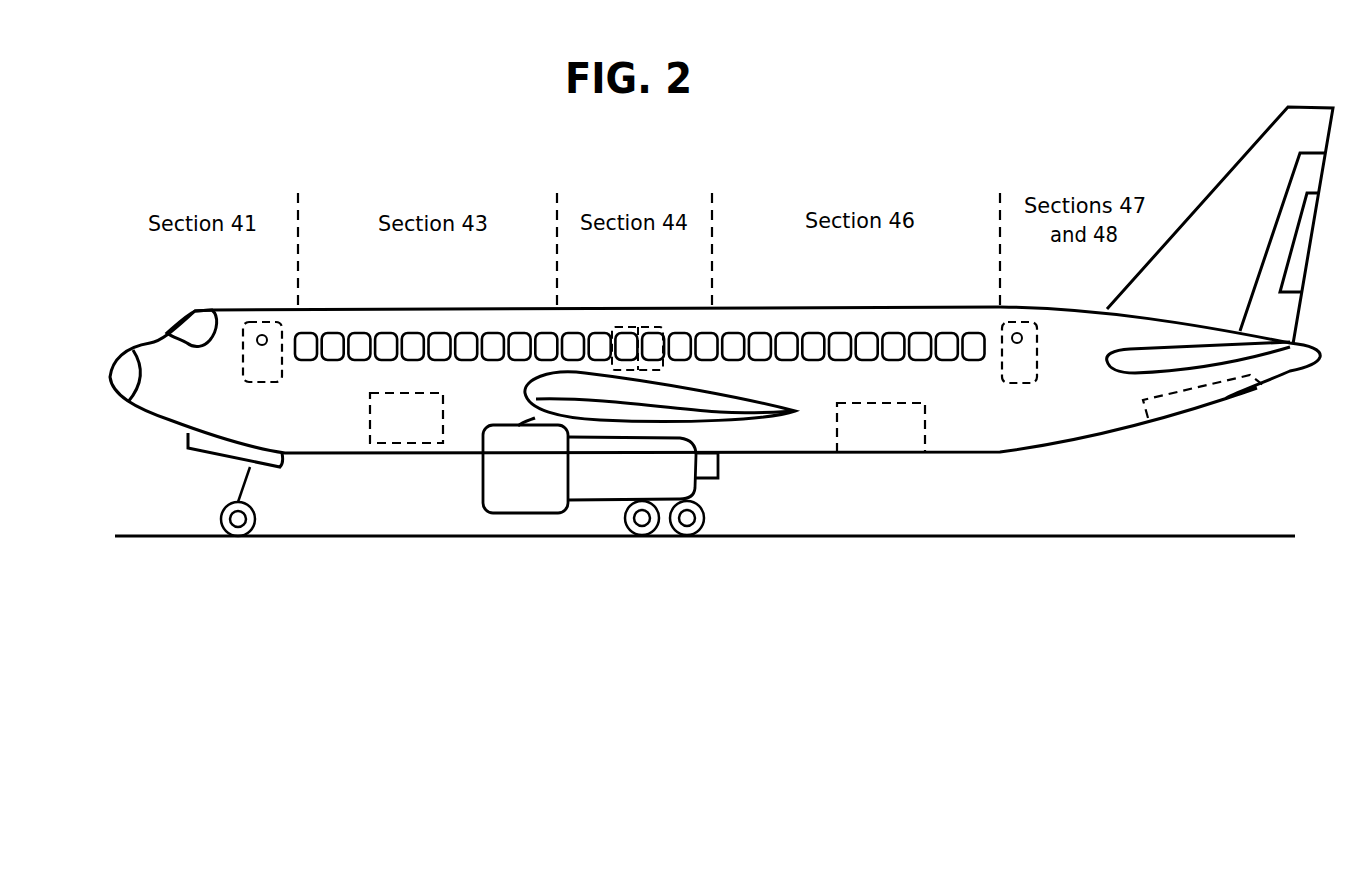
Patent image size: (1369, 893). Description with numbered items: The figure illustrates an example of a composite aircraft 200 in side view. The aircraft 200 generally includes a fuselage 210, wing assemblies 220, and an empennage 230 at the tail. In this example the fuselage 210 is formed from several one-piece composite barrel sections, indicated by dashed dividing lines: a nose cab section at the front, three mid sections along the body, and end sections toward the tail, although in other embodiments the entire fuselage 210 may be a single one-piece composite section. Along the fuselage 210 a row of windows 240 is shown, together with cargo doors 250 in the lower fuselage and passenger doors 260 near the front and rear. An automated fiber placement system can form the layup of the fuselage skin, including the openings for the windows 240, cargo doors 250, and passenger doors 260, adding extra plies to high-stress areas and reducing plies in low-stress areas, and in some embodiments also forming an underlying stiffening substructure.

The composite aircraft 200 is at (136, 299).
The fuselage 210 is at (1062, 447).
The wing assemblies 220 is at (755, 427).
The empennage 230 is at (1223, 177).
The windows 240 is at (860, 333).
The cargo doors 250 is at (910, 432).
The passenger doors 260 is at (263, 323).